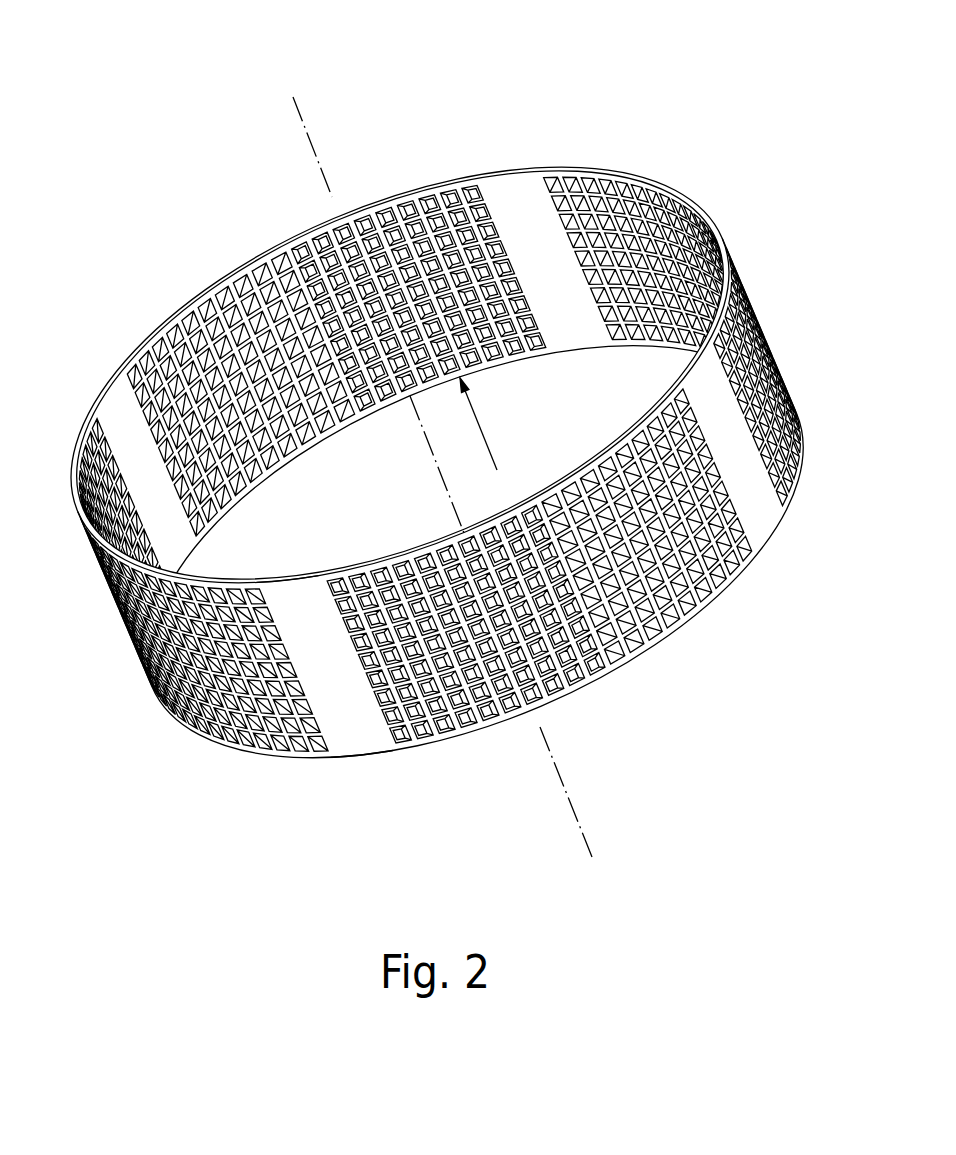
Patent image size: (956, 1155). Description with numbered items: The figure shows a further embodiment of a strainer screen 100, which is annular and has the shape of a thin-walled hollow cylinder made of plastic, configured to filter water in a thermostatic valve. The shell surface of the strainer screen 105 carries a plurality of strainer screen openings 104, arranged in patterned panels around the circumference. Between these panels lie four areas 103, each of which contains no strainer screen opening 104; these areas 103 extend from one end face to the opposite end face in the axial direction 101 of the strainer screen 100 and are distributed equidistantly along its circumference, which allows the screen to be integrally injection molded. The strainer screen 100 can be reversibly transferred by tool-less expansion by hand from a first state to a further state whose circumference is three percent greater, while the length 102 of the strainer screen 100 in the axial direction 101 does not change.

The strainer screen 100 is at (383, 31).
The axial direction 101 is at (572, 806).
The length 102 is at (388, 192).
The area 103 is at (362, 695).
The strainer screen openings 104 is at (653, 620).
The shell surface of the strainer screen 105 is at (569, 182).